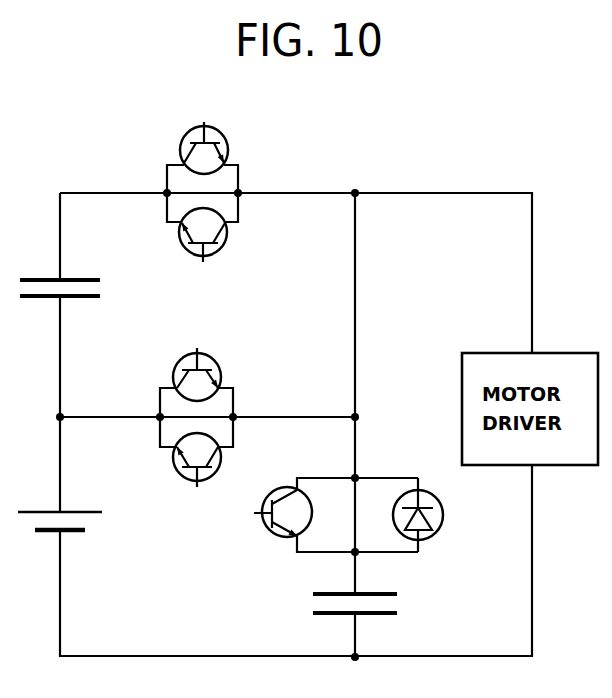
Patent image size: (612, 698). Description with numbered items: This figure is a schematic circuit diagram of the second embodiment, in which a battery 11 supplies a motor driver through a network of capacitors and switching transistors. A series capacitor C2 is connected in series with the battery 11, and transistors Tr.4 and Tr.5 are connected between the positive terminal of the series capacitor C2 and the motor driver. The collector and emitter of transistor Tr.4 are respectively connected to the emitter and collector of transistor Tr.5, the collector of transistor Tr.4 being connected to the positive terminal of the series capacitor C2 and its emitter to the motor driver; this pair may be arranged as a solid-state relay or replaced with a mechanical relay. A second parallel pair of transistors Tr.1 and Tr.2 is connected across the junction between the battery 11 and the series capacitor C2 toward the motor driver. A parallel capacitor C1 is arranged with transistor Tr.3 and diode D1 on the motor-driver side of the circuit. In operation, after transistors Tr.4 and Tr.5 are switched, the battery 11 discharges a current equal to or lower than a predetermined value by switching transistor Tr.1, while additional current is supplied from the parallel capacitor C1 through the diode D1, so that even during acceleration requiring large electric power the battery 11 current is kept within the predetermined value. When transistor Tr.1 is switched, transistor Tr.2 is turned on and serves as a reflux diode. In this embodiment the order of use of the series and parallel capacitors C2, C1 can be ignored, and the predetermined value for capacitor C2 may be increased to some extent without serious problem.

The transistor Tr.1 is at (196, 368).
The transistor Tr.2 is at (196, 465).
The transistor Tr.3 is at (332, 531).
The transistor Tr.4 is at (202, 144).
The transistor Tr.5 is at (202, 242).
The diode D1 is at (421, 508).
The parallel capacitor C1 is at (372, 608).
The series capacitor C2 is at (61, 272).
The battery 11 is at (93, 523).